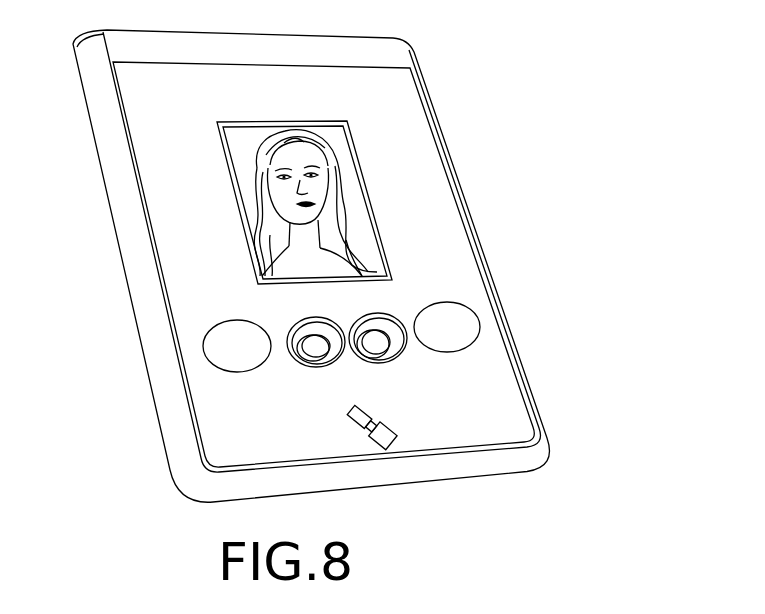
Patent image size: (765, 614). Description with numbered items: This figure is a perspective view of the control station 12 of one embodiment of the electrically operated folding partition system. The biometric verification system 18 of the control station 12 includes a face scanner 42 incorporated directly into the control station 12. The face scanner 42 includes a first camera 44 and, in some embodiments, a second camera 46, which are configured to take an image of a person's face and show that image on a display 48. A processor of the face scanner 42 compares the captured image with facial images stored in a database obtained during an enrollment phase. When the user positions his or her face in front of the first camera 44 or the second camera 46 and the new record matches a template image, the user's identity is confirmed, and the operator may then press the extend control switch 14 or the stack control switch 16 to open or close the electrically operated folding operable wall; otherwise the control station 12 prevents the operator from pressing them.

The control station 12 is at (530, 212).
The extend control switch 14 is at (203, 345).
The stack control switch 16 is at (475, 322).
The biometric verification system 18 is at (358, 385).
The face scanner 42 is at (415, 268).
The first camera 44 is at (298, 358).
The second camera 46 is at (398, 358).
The display 48 is at (242, 204).